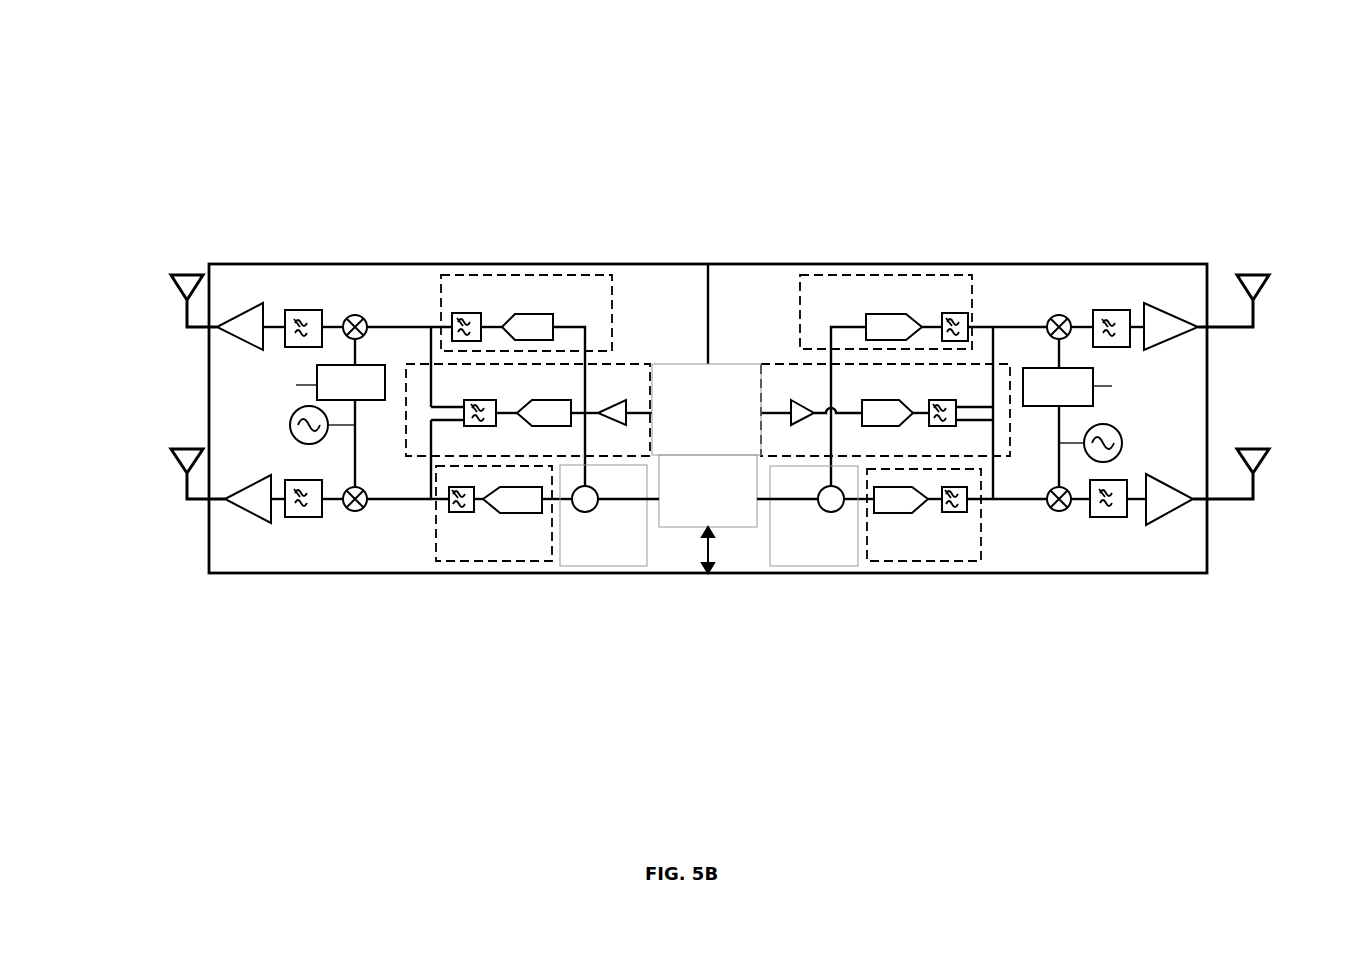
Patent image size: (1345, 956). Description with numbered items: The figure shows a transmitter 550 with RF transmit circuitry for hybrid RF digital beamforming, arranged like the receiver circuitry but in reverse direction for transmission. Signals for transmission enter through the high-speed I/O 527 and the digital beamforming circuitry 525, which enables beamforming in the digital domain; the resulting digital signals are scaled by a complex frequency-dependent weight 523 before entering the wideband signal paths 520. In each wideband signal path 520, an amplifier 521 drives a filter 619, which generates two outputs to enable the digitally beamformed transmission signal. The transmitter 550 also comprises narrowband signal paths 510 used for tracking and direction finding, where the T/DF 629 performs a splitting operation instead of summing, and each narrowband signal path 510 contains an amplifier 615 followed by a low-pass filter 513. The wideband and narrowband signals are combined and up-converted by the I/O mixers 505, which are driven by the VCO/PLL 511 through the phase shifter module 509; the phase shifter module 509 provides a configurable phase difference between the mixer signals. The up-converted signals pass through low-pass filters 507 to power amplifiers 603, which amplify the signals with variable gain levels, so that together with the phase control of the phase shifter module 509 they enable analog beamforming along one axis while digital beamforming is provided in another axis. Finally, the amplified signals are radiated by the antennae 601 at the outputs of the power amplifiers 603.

The transmitter 550 is at (212, 90).
The antenna 601 is at (190, 275).
The power amplifier 603 is at (263, 303).
The I/O mixer 505 is at (360, 316).
The low-pass filter 507 is at (305, 310).
The phase shifter module 509 is at (703, 413).
The narrowband signal path 510 is at (612, 330).
The VCO/PLL 511 is at (290, 428).
The low-pass filter 513 is at (460, 313).
The amplifier 615 is at (535, 314).
The wideband signal path 520 is at (708, 410).
The filter 619 is at (488, 427).
The amplifier 521 is at (533, 427).
The complex frequency-dependent weight 523 is at (608, 427).
The digital beamforming circuitry 525 is at (706, 409).
The high-speed I/O 527 is at (708, 514).
The T/DF 629 is at (709, 515).